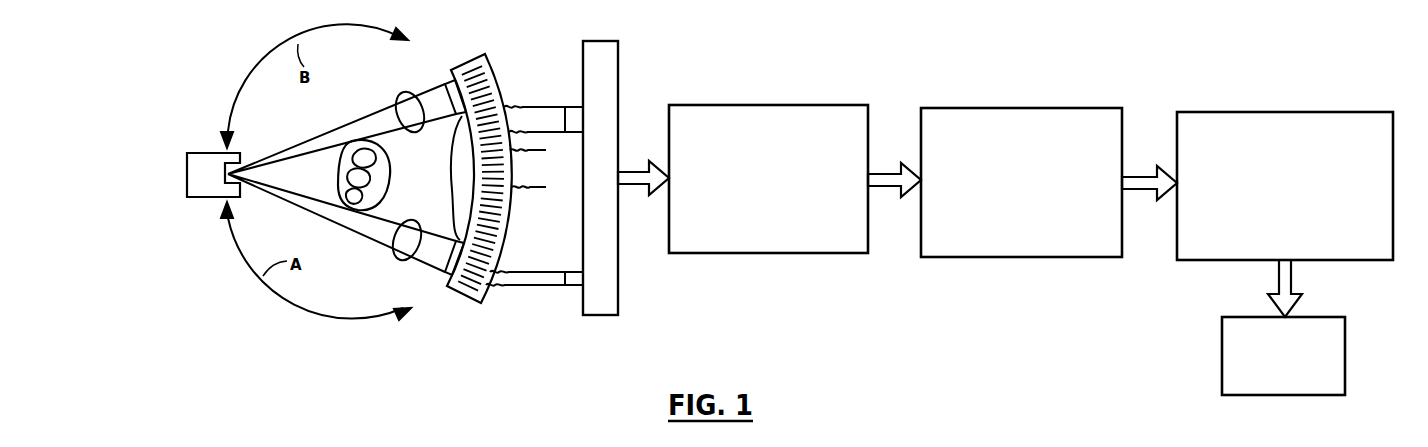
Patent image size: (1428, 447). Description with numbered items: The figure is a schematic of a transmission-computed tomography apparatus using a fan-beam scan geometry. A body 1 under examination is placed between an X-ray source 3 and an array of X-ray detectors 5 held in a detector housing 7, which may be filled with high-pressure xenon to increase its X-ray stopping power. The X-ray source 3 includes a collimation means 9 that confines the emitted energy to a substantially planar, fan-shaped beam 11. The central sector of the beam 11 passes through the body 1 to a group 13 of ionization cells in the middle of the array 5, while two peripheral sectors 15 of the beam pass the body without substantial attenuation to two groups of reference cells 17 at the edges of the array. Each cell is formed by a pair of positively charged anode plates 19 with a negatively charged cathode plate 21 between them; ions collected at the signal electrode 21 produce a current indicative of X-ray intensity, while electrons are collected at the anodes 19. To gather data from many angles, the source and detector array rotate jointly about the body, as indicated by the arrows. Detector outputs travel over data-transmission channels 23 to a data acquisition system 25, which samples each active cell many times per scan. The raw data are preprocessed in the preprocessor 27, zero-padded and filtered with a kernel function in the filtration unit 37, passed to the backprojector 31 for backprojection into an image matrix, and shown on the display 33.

The body 1 is at (387, 193).
The X-ray source 3 is at (211, 176).
The array of X-ray detectors 5 is at (472, 187).
The detector housing 7 is at (462, 62).
The collimation means 9 is at (232, 151).
The fan-shaped beam 11 is at (309, 174).
The group of ionization cells 13 is at (450, 176).
The peripheral sectors 15 is at (404, 93).
The groups of reference cells 17 is at (445, 97).
The anode plates 19 is at (539, 151).
The cathode plate 21 is at (539, 188).
The data-transmission channels 23 is at (565, 107).
The data acquisition system 25 is at (593, 315).
The preprocessor 27 is at (773, 253).
The backprojector 31 is at (1313, 260).
The display 33 is at (1222, 373).
The filtration unit 37 is at (977, 257).